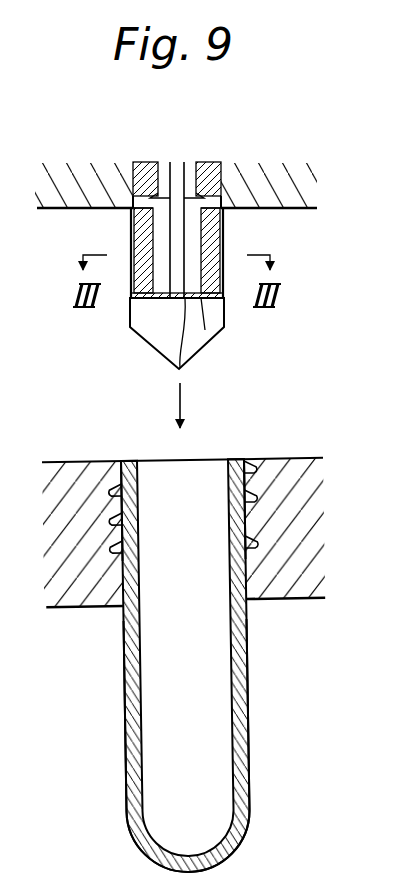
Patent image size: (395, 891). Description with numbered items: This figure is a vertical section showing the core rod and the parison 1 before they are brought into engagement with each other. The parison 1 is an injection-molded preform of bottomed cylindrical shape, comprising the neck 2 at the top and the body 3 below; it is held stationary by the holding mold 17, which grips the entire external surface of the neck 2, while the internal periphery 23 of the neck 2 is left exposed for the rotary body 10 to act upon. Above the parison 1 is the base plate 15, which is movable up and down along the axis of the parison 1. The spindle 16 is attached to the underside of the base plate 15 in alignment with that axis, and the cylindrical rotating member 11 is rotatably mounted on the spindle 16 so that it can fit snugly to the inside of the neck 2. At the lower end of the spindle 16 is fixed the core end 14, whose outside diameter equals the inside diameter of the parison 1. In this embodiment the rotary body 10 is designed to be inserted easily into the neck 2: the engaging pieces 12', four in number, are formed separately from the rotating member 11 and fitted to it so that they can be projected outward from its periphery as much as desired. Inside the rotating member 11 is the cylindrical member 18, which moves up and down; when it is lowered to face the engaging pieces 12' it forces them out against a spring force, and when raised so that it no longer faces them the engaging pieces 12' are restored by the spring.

The parison 1 is at (251, 682).
The neck 2 is at (184, 486).
The body 3 is at (165, 746).
The rotary body 10 is at (284, 220).
The rotating member 11 is at (130, 297).
The engaging pieces 12' is at (175, 252).
The core end 14 is at (191, 341).
The base plate 15 is at (176, 159).
The spindle 16 is at (186, 207).
The holding mold 17 is at (206, 532).
The cylindrical member 18 is at (175, 162).
The internal periphery 23 is at (183, 482).